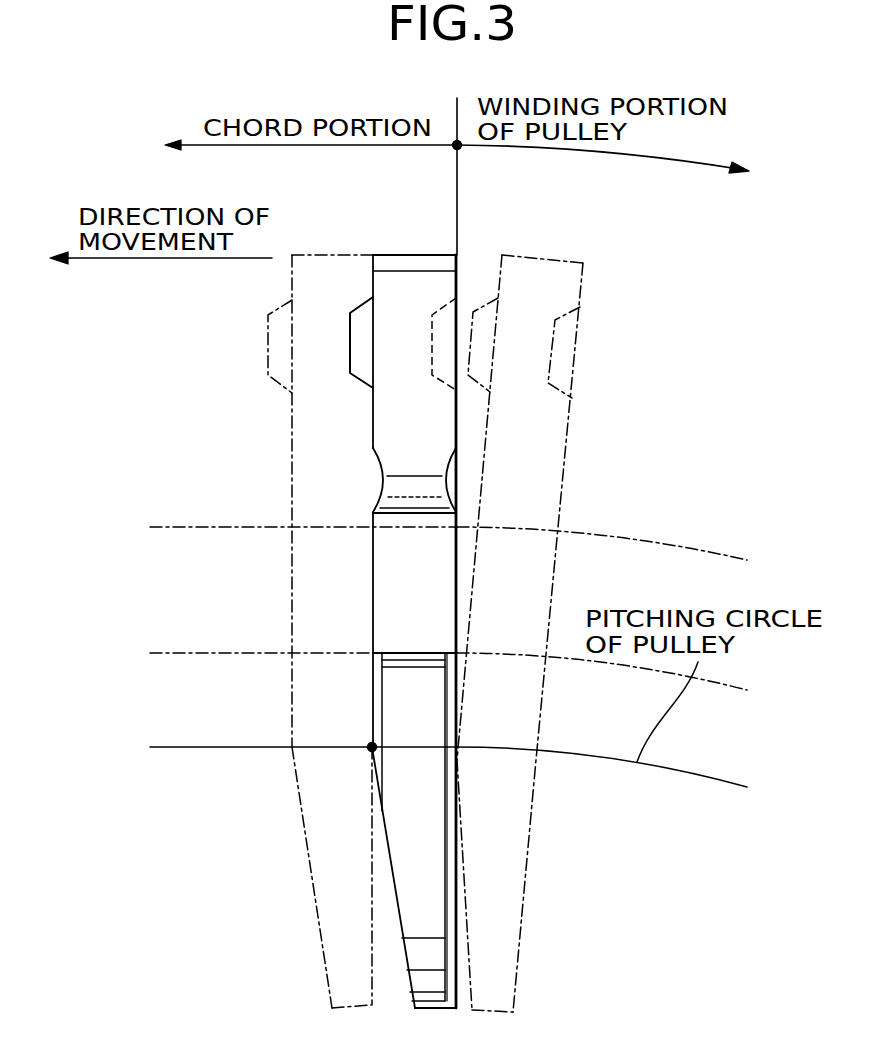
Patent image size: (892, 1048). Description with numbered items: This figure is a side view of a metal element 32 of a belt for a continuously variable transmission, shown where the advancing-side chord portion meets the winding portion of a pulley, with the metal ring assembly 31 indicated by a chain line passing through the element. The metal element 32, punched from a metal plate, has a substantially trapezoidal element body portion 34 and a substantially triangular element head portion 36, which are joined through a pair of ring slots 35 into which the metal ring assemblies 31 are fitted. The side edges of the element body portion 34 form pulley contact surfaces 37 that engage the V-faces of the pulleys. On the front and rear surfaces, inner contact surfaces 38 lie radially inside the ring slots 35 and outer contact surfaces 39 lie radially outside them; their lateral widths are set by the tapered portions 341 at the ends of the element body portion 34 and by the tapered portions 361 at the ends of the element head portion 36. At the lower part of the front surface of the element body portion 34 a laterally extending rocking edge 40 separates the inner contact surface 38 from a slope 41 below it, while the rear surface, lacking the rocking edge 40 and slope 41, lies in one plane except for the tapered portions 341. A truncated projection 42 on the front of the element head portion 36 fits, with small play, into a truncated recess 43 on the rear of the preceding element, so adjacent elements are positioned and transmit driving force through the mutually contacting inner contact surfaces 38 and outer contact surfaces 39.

The metal ring assembly 31 is at (187, 527).
The metal element 32 is at (409, 233).
The element body portion 34 is at (360, 689).
The tapered portion 341 is at (484, 728).
The ring slot 35 is at (440, 615).
The element head portion 36 is at (362, 287).
The tapered portion 361 is at (498, 476).
The pulley contact surface 37 is at (400, 870).
The inner contact surface 38 is at (372, 668).
The outer contact surface 39 is at (373, 437).
The rocking edge 40 is at (371, 746).
The slope 41 is at (387, 847).
The projection 42 is at (350, 357).
The recess 43 is at (445, 362).